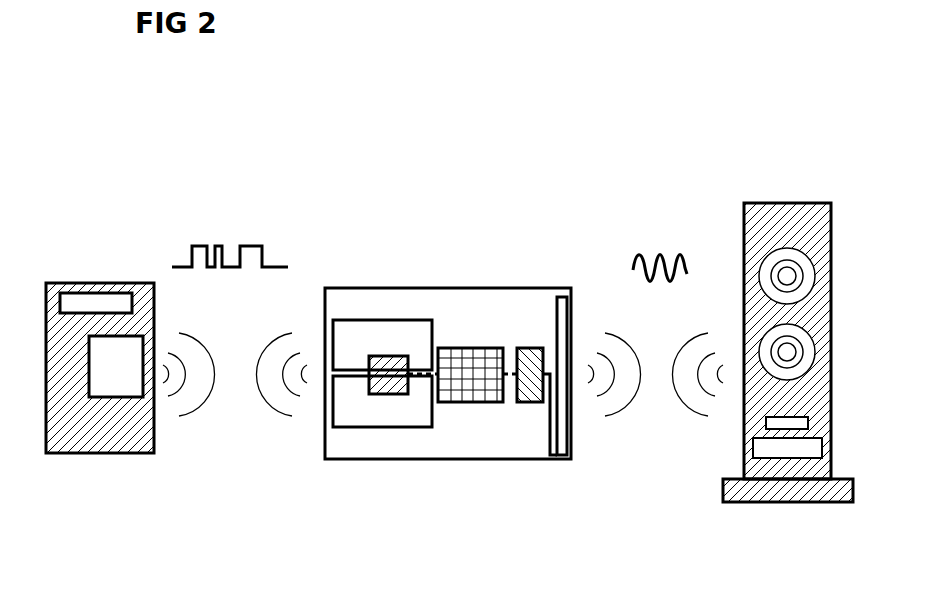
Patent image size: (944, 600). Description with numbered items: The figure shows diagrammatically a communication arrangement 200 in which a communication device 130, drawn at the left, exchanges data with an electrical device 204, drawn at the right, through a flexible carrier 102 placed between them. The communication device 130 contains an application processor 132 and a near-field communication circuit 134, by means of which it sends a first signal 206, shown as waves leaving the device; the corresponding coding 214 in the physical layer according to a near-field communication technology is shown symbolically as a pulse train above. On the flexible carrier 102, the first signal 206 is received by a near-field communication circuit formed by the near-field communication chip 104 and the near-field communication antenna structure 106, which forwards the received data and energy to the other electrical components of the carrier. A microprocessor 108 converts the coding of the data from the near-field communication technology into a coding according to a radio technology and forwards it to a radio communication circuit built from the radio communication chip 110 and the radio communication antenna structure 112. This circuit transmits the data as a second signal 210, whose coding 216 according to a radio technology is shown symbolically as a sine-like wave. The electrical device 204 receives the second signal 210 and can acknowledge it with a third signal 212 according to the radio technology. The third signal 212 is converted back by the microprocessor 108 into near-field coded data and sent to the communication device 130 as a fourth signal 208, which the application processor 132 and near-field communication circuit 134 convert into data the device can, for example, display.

The communication arrangement 200 is at (468, 142).
The communication device 130 is at (90, 453).
The application processor 132 is at (68, 302).
The near-field communication circuit 134 is at (110, 352).
The coding 214 is at (213, 240).
The first signal 206 is at (193, 416).
The fourth signal 208 is at (278, 416).
The flexible carrier 102 is at (446, 288).
The near-field communication chip 104 is at (388, 377).
The near-field communication antenna structure 106 is at (342, 320).
The microprocessor 108 is at (468, 362).
The radio communication chip 110 is at (533, 348).
The radio communication antenna structure 112 is at (565, 297).
The coding 216 is at (660, 245).
The second signal 210 is at (617, 416).
The third signal 212 is at (687, 416).
The electrical device 204 is at (787, 502).